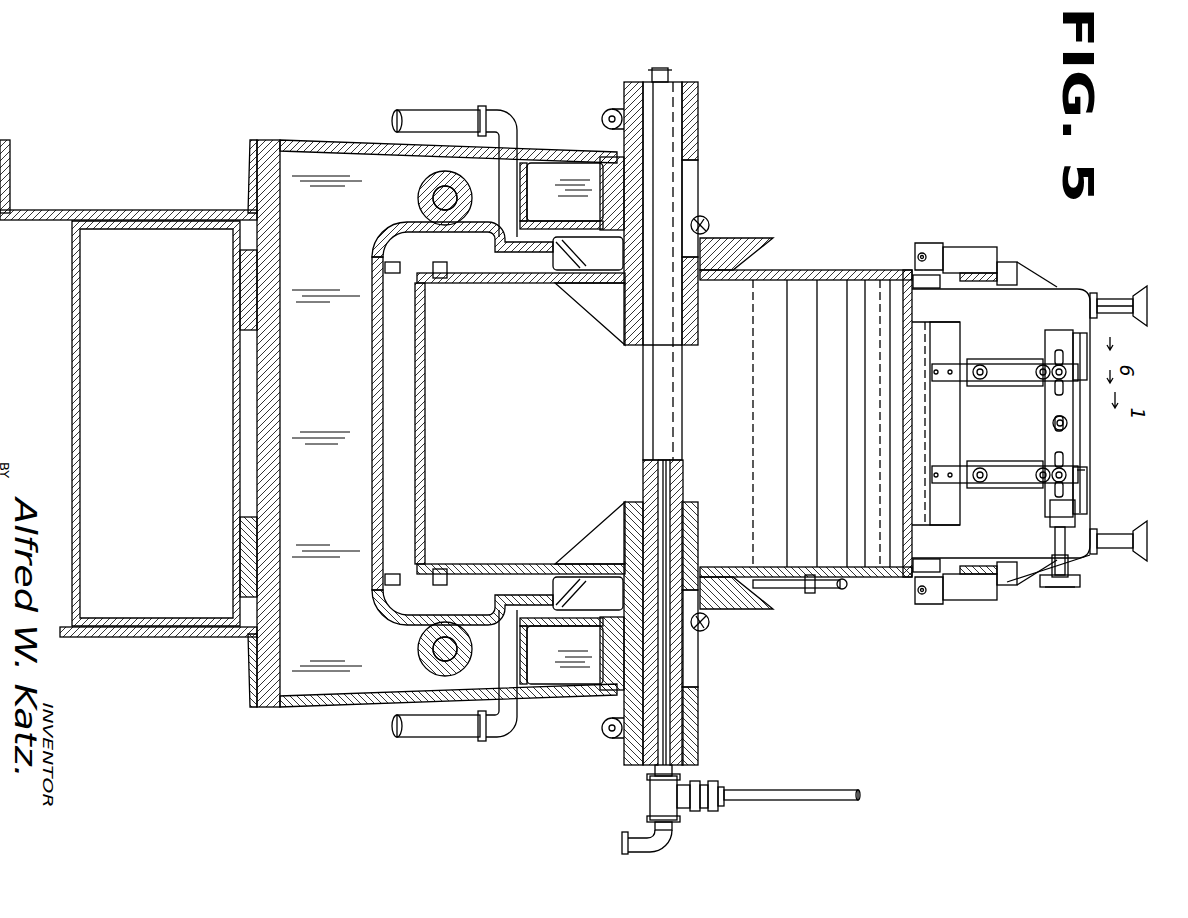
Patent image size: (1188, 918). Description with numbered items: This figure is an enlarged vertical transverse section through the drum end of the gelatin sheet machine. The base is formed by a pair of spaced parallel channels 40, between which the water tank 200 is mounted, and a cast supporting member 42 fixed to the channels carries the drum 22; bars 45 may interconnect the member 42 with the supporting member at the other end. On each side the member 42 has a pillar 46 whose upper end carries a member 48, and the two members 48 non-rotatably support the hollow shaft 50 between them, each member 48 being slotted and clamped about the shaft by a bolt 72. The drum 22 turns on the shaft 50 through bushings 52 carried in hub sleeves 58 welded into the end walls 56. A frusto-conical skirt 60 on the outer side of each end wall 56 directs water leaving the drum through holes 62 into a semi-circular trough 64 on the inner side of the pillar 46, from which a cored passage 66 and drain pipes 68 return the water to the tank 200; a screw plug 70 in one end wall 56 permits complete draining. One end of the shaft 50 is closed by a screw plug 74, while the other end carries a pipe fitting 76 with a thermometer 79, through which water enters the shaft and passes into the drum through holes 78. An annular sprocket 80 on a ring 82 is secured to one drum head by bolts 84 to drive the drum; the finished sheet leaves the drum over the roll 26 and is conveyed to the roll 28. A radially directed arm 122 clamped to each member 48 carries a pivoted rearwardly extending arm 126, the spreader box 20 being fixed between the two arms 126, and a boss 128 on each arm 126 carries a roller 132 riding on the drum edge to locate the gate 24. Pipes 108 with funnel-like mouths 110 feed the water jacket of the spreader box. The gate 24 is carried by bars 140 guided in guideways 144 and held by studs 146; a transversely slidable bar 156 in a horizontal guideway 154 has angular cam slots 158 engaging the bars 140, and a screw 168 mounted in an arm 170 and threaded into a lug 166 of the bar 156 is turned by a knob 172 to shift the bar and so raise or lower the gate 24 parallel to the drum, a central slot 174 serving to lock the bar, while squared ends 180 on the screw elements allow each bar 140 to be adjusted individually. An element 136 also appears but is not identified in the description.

The channels 40 is at (150, 210).
The water tank 200 is at (72, 290).
The cast supporting member 42 is at (264, 139).
The pillar 46 is at (592, 158).
The bars 45 is at (425, 190).
The drain pipes 68 is at (446, 110).
The cored passage 66 is at (561, 423).
The member 48 is at (606, 152).
The screw plug 70 is at (443, 280).
The openings 62 is at (600, 565).
The semi-circular trough 64 is at (555, 284).
The radially directed arm 122 is at (699, 116).
The hub sleeves 58 is at (700, 312).
The bushings 52 is at (700, 458).
The bolt 72 is at (707, 218).
The hollow shaft 50 is at (682, 425).
The holes 78 is at (646, 462).
The roll 28 is at (700, 500).
The screw plug 74 is at (668, 74).
The drum 22 is at (842, 260).
The gate 24 is at (900, 438).
The roll 26 is at (800, 282).
The end walls 56 is at (848, 490).
The frusto-conical skirt 60 is at (768, 240).
The annular sprocket 80 is at (838, 590).
The ring 82 is at (808, 592).
The bolts 84 is at (815, 590).
The pipe fitting 76 is at (652, 792).
The thermometer 79 is at (808, 800).
The gelatin spreader box 20 is at (1067, 280).
The studs 146 is at (995, 484).
The guideways 144 is at (1017, 362).
The bars 140 is at (997, 364).
The squared ends 180 is at (1050, 358).
The funnel-like mouths 110 is at (1140, 550).
The short pipes 108 is at (1120, 560).
The horizontal guideway 154 is at (1105, 357).
The angularly extending slot 158 is at (1110, 399).
The boss 128 is at (966, 252).
The roller 132 is at (916, 258).
The rearwardly extending arm 126 is at (990, 270).
The wedge 136 is at (1053, 283).
The lug 166 is at (1050, 512).
The arm 170 is at (1068, 580).
The screw 168 is at (1070, 560).
The longitudinally extending slot 174 is at (1080, 465).
The operating knob 172 is at (1058, 586).
The transversely slidable bar 156 is at (1080, 472).